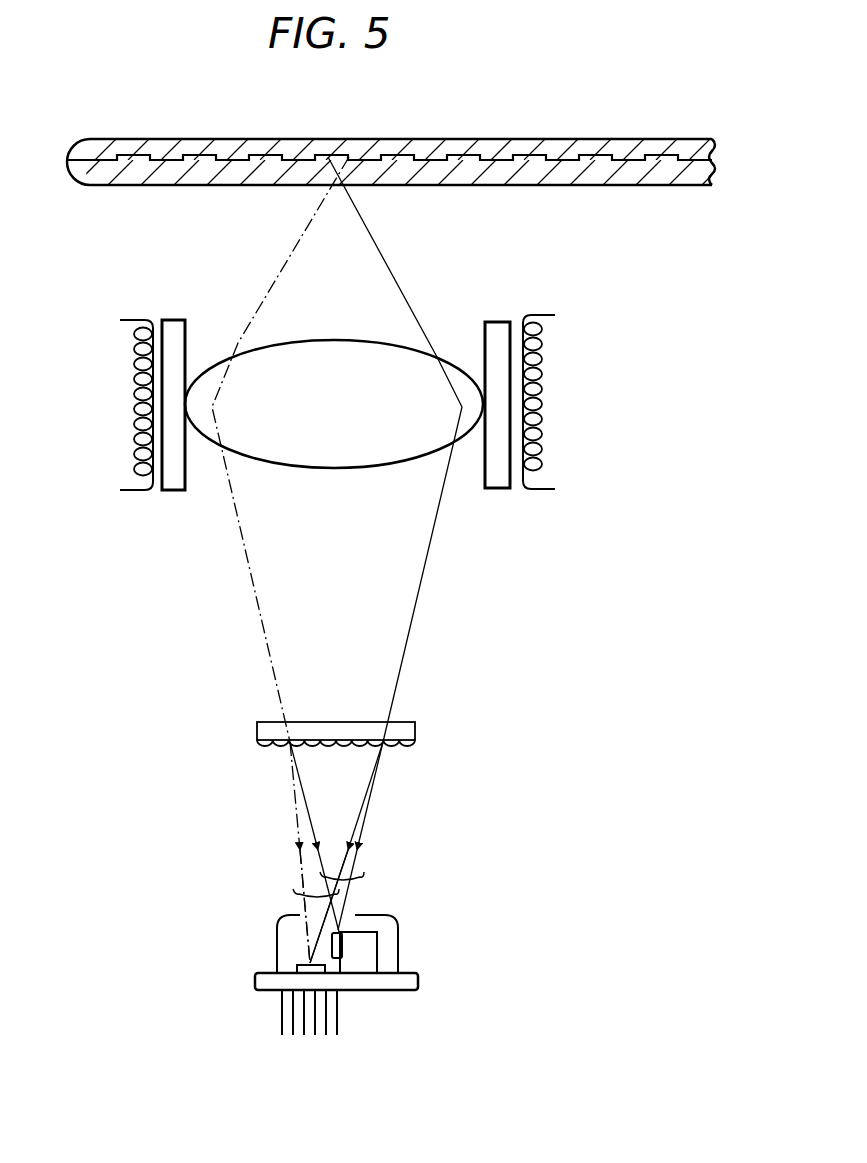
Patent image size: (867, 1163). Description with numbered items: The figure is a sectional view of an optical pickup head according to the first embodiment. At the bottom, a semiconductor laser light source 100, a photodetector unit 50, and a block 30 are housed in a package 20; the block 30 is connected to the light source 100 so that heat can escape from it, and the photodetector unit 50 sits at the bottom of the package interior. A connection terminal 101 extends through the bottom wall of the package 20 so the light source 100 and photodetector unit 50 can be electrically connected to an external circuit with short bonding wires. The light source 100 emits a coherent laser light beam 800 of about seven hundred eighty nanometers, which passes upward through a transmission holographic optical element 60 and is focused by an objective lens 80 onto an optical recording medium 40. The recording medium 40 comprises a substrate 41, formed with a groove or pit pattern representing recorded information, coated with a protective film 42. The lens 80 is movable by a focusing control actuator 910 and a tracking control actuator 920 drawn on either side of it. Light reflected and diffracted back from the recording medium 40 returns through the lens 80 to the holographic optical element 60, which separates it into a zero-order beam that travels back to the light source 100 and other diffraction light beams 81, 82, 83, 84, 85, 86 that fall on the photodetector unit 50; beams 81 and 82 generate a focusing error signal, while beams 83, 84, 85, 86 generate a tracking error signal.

The optical recording medium 40 is at (645, 139).
The substrate 41 is at (83, 140).
The protective film 42 is at (80, 186).
The objective lens 80 is at (443, 360).
The focusing control actuator 910 is at (565, 500).
The tracking control actuator 920 is at (193, 503).
The transmission holographic optical element 60 is at (413, 742).
The diffraction light beam 81 is at (297, 893).
The diffraction light beam 82 is at (386, 560).
The diffraction light beam 83 is at (314, 837).
The diffraction light beam 84 is at (360, 836).
The diffraction light beam 85 is at (305, 906).
The diffraction light beam 86 is at (329, 906).
The laser light beam 800 is at (360, 873).
The package 20 is at (400, 927).
The block 30 is at (363, 948).
The photodetector unit 50 is at (297, 968).
The semiconductor laser light source 100 is at (345, 955).
The connection terminal 101 is at (343, 1047).